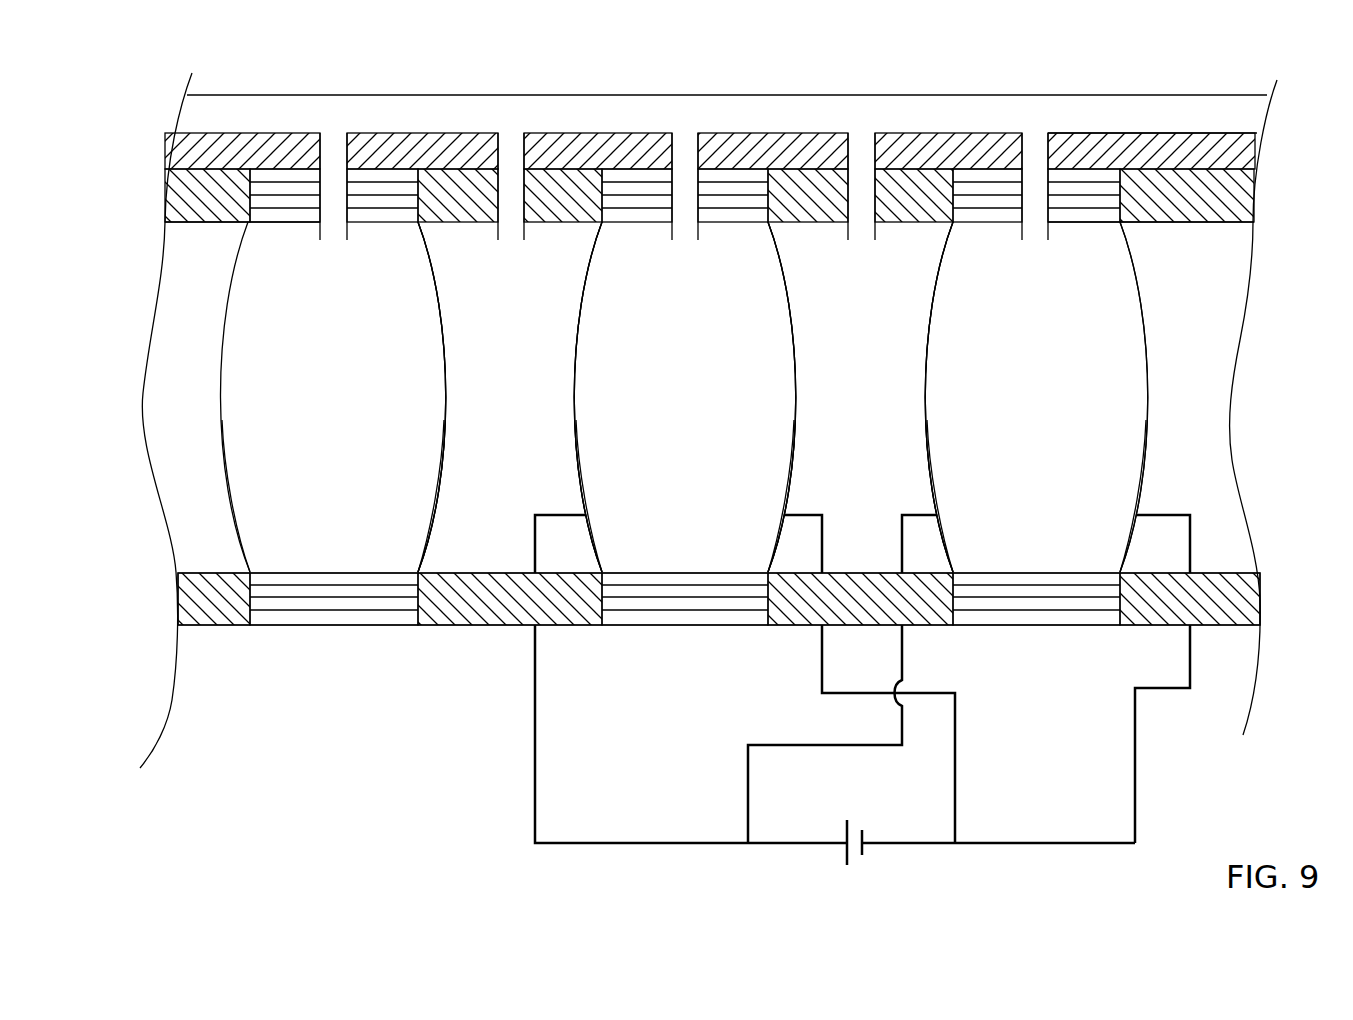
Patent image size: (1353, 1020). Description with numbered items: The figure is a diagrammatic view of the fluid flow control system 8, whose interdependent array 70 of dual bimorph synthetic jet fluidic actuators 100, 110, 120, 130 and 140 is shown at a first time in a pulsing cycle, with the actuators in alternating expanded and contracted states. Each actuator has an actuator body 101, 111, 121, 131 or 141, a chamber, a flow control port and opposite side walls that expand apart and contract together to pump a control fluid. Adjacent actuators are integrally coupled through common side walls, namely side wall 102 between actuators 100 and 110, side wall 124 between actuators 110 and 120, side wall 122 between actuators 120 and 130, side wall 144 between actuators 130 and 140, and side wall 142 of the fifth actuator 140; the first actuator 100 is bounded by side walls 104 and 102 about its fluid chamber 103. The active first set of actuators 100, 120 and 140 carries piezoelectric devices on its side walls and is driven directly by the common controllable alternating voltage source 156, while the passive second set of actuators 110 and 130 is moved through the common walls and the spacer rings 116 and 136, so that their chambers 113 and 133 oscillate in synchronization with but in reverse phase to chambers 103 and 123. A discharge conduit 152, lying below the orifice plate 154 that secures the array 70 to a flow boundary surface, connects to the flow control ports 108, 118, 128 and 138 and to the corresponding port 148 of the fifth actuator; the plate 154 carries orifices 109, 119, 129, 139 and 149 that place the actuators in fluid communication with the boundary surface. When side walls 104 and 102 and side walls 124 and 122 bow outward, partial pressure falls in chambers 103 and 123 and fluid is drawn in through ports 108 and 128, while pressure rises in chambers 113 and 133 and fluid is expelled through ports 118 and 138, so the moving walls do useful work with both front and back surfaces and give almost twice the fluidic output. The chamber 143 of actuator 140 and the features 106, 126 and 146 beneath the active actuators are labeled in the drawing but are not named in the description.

The fluid flow control system 8 is at (183, 846).
The array of interdependent fluidic actuators 70 is at (1216, 384).
The first fluidic actuator 100 is at (313, 378).
The actuator body 101 is at (448, 326).
The side wall 102 is at (442, 447).
The fluid chamber 103 is at (352, 432).
The side wall 104 is at (227, 447).
The first electrode 106 is at (384, 222).
The flow control port 108 is at (333, 138).
The orifice 109 is at (350, 140).
The second fluidic actuator 110 is at (490, 378).
The actuator body 111 is at (582, 326).
The fluid chamber 113 is at (525, 432).
The spacer ring 116 is at (559, 222).
The flow control port 118 is at (511, 138).
The orifice 119 is at (527, 140).
The third fluidic actuator 120 is at (663, 378).
The actuator body 121 is at (794, 326).
The side wall 122 is at (792, 447).
The fluid chamber 123 is at (704, 432).
The side wall 124 is at (579, 447).
The third electrode 126 is at (734, 222).
The flow control port 128 is at (685, 138).
The orifice 129 is at (701, 140).
The fourth fluidic actuator 130 is at (842, 378).
The actuator body 131 is at (933, 326).
The fluid chamber 133 is at (877, 432).
The spacer ring 136 is at (908, 222).
The flow control port 138 is at (862, 138).
The orifice 139 is at (878, 140).
The fifth fluidic actuator 140 is at (1015, 378).
The actuator body 141 is at (1146, 326).
The side wall 142 is at (1143, 447).
The fifth fluid 143 is at (1055, 432).
The side wall 144 is at (930, 447).
The fifth electrode 146 is at (1086, 222).
The fifth channel 148 is at (1035, 138).
The orifice 149 is at (1051, 140).
The discharge conduit 152 is at (1205, 130).
The orifice plate 154 is at (1183, 94).
The alternating voltage source 156 is at (852, 863).